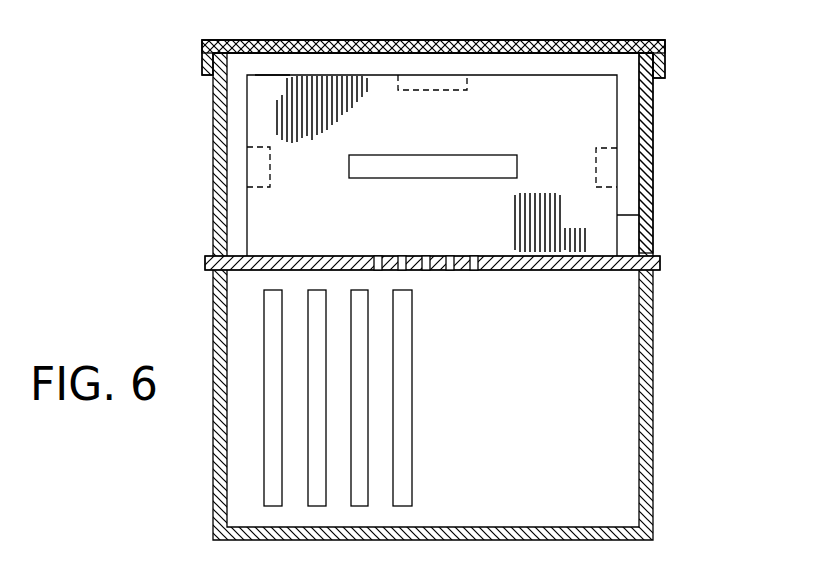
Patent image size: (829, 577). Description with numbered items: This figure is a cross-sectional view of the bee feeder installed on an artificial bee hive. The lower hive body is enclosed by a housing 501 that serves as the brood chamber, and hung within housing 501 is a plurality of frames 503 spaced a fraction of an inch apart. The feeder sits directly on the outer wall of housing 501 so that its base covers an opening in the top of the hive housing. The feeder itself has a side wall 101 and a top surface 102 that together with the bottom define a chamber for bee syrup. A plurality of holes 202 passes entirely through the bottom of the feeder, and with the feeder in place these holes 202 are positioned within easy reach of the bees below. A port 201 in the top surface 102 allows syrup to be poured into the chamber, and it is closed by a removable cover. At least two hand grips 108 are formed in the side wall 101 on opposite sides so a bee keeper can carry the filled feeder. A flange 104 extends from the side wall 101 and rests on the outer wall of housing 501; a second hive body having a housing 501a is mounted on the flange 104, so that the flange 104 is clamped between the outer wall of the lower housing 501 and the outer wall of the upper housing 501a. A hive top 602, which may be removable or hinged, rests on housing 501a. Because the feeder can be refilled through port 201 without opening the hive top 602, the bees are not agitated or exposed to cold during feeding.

The side wall 101 is at (639, 215).
The top surface 102 is at (265, 75).
The flange 104 is at (660, 265).
The hand grip 108 is at (604, 150).
The port 201 is at (467, 88).
The holes 202 is at (378, 256).
The housing 501 is at (653, 423).
The housing 501a is at (653, 148).
The frames 503 is at (369, 402).
The hive top 602 is at (632, 40).